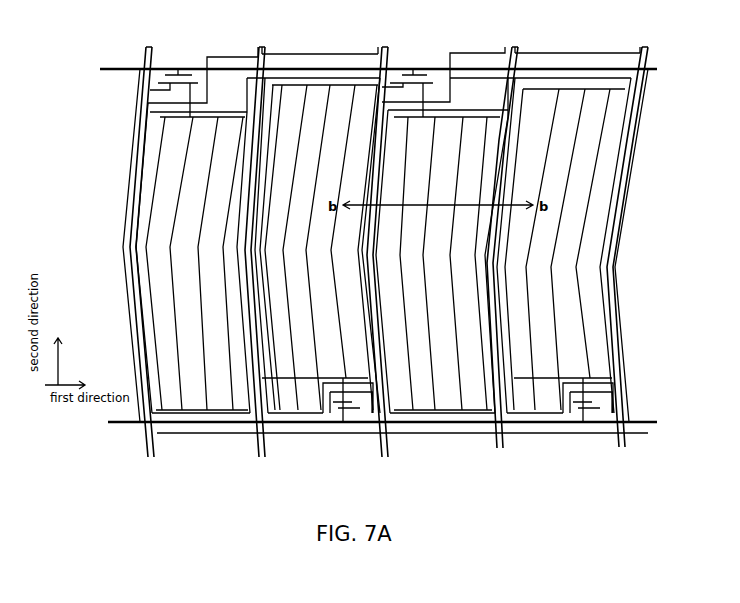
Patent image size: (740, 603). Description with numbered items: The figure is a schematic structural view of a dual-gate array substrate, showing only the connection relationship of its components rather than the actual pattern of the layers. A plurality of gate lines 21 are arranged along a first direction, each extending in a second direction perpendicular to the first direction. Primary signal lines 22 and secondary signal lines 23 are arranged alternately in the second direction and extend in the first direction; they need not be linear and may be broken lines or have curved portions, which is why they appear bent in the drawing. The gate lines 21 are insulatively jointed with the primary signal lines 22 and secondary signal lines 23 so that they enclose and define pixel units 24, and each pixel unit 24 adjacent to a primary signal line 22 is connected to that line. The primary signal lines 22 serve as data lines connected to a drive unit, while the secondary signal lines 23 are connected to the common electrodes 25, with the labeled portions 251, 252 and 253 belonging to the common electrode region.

The gate line 21 is at (122, 424).
The primary signal line 22 is at (147, 47).
The secondary signal line 23 is at (258, 48).
The pixel unit 24 is at (150, 140).
The common electrode 25 is at (340, 58).
The first portion of common line 251 is at (388, 78).
The second portion of common line 252 is at (487, 78).
The third portion of common line 253 is at (550, 74).